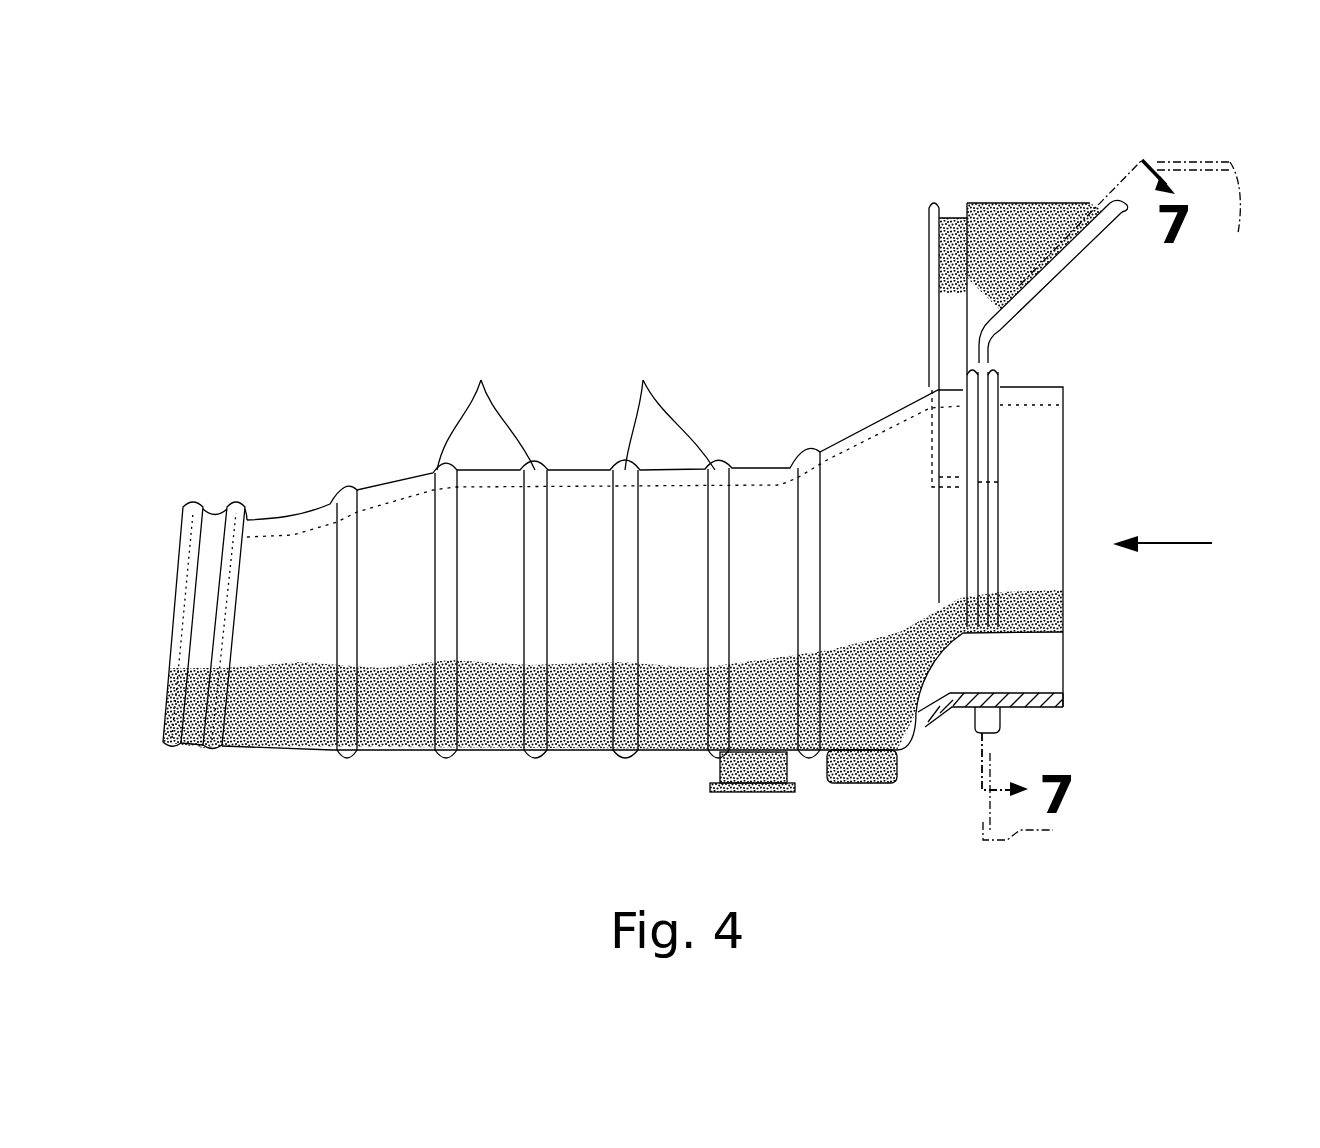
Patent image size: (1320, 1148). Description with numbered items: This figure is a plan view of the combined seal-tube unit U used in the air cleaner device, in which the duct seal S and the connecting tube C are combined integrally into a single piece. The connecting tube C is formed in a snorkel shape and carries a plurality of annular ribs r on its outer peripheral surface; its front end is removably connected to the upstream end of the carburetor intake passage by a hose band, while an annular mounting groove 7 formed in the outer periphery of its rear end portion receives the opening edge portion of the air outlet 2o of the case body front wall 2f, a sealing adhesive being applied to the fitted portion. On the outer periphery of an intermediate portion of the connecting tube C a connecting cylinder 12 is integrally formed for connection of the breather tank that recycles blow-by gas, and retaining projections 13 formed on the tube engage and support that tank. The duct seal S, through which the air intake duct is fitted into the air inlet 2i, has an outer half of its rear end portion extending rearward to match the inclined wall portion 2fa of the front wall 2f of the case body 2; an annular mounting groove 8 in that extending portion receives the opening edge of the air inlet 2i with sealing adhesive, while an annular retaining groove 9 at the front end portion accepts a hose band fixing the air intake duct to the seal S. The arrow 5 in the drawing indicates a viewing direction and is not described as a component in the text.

The case body 2 is at (1205, 152).
The front wall 2f is at (980, 822).
The inclined wall portion 2fa is at (988, 205).
The air inlet 2i is at (1040, 210).
The air outlet 2o is at (990, 700).
The flow direction arrow 5 is at (1185, 552).
The annular mounting groove 7 is at (988, 733).
The annular mounting groove 8 is at (1127, 213).
The annular retaining groove 9 is at (955, 218).
The connecting cylinder 12 is at (747, 787).
The retaining projections 13 is at (867, 782).
The connecting tube C is at (748, 470).
The duct seal S is at (930, 292).
The seal-tube unit U is at (845, 275).
The annular ribs r is at (643, 380).